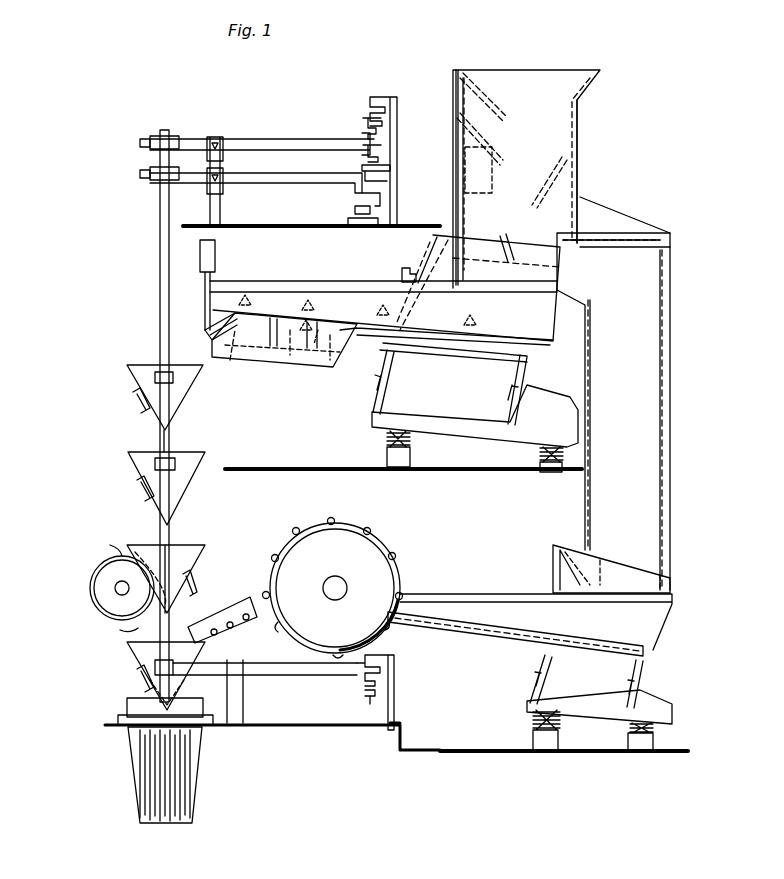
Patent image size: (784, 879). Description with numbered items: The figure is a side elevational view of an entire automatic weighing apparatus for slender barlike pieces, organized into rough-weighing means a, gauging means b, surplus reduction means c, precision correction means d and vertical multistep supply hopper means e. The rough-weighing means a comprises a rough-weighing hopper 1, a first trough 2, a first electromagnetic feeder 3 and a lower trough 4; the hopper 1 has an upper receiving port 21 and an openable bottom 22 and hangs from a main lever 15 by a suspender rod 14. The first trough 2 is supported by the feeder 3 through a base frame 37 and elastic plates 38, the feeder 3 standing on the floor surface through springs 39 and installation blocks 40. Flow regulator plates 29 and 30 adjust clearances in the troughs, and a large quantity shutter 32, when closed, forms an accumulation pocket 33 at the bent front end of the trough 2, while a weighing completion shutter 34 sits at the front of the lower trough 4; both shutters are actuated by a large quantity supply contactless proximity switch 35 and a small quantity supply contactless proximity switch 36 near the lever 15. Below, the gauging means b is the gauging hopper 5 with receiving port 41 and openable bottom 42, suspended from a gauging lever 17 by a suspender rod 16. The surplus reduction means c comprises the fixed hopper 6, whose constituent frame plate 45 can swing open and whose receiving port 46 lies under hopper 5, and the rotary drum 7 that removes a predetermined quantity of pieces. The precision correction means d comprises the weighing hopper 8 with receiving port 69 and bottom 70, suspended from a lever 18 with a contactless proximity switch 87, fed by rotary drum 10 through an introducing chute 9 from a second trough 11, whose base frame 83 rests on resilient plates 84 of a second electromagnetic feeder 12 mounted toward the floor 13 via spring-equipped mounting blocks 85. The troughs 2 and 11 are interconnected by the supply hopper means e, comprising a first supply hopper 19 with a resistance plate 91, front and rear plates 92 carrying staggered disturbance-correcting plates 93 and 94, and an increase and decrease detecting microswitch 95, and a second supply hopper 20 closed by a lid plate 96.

The rough-weighing hopper 1 is at (137, 375).
The first trough 2 is at (288, 281).
The first electromagnetic feeder 3 is at (422, 424).
The lower trough 4 is at (263, 360).
The gauging hopper 5 is at (185, 456).
The surplus reduction hopper 6 is at (180, 545).
The surplus reduction rotary drum 7 is at (103, 590).
The precision correction supply weighing hopper 8 is at (130, 651).
The introducing chute 9 is at (215, 615).
The rotary drum 10 is at (362, 558).
The second trough 11 is at (470, 593).
The second electromagnetic feeder 12 is at (565, 703).
The floor 13 is at (447, 741).
The suspender rod 14 is at (160, 226).
The main lever 15 is at (292, 142).
The suspender rod 16 is at (165, 434).
The gauging lever 17 is at (283, 178).
The precision correction weighing lever 18 is at (285, 670).
The first supply hopper 19 is at (579, 128).
The second supply hopper 20 is at (640, 373).
The receiving port 21 is at (140, 348).
The bottom 22 is at (137, 408).
The flow regulator plate 29 is at (402, 275).
The flow regulator plate 30 is at (305, 345).
The large quantity shutter 32 is at (204, 303).
The accumulation pocket 33 is at (226, 290).
The weighing completion shutter 34 is at (210, 328).
The large quantity supply contactless proximity switch 35 is at (388, 170).
The small quantity supply contactless proximity switch 36 is at (384, 97).
The base frame 37 is at (450, 348).
The elastic plates 38 is at (374, 398).
The springs 39 is at (387, 440).
The installation blocks 40 is at (398, 470).
The receiving port 41 is at (188, 450).
The bottom 42 is at (174, 500).
The constituent frame plate 45 is at (190, 580).
The receiving port 46 is at (149, 537).
The receiving port 69 is at (163, 636).
The bottom 70 is at (134, 683).
The base frame 83 is at (506, 638).
The resilient plates 84 is at (530, 683).
The spring-equipped mounting blocks 85 is at (533, 720).
The contactless proximity switch 87 is at (392, 661).
The resistance plate 91 is at (512, 242).
The front plate 92 is at (455, 112).
The disturbance-correcting plate 93 is at (500, 120).
The disturbance-correcting plate 94 is at (546, 186).
The increase and decrease detecting microswitch 95 is at (482, 160).
The lid plate 96 is at (622, 220).
The rough-weighing means a is at (110, 360).
The gauging means b is at (106, 492).
The surplus reduction means c is at (73, 564).
The precision correction means d is at (308, 507).
The vertical multistep supply hopper means e is at (635, 429).